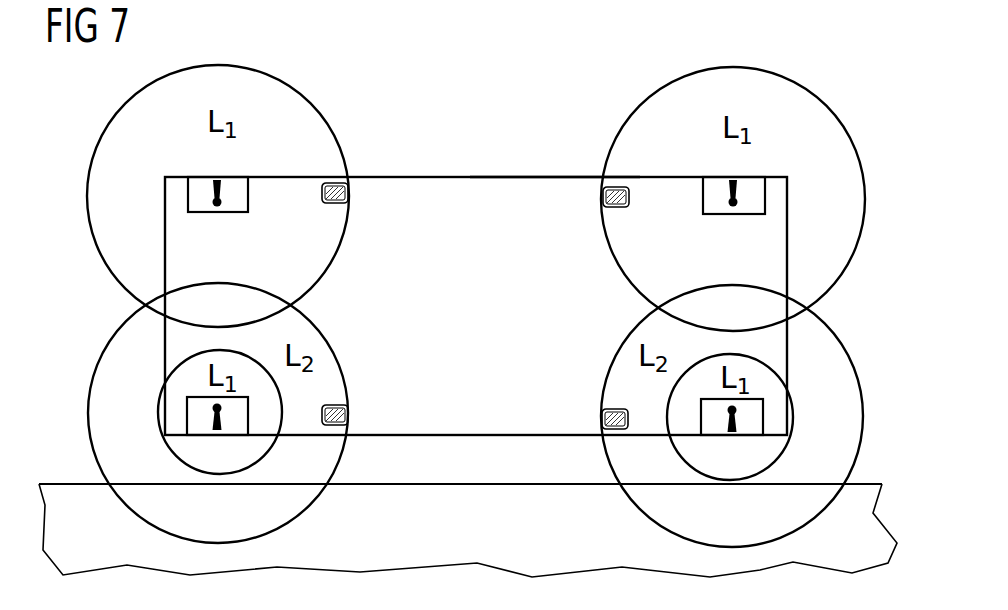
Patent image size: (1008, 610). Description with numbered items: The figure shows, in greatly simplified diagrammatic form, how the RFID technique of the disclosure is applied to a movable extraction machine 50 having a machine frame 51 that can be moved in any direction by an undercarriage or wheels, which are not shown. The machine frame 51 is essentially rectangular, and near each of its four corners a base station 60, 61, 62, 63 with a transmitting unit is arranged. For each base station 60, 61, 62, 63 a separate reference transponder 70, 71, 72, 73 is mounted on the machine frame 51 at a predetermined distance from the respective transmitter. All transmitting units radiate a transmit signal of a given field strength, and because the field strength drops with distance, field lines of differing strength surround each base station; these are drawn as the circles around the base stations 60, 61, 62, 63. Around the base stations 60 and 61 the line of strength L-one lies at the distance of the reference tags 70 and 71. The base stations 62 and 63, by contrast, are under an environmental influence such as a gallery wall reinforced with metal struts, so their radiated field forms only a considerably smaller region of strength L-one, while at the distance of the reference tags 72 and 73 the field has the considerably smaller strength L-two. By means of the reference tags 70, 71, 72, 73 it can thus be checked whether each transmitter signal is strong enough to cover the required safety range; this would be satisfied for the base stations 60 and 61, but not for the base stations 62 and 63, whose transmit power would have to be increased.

The movable extraction machine 50 is at (445, 185).
The machine frame 51 is at (541, 178).
The base station 60 is at (249, 197).
The base station 61 is at (703, 203).
The base station 62 is at (753, 420).
The base station 63 is at (195, 415).
The reference transponder 70 is at (349, 193).
The reference transponder 71 is at (602, 197).
The reference transponder 72 is at (601, 417).
The reference transponder 73 is at (349, 413).